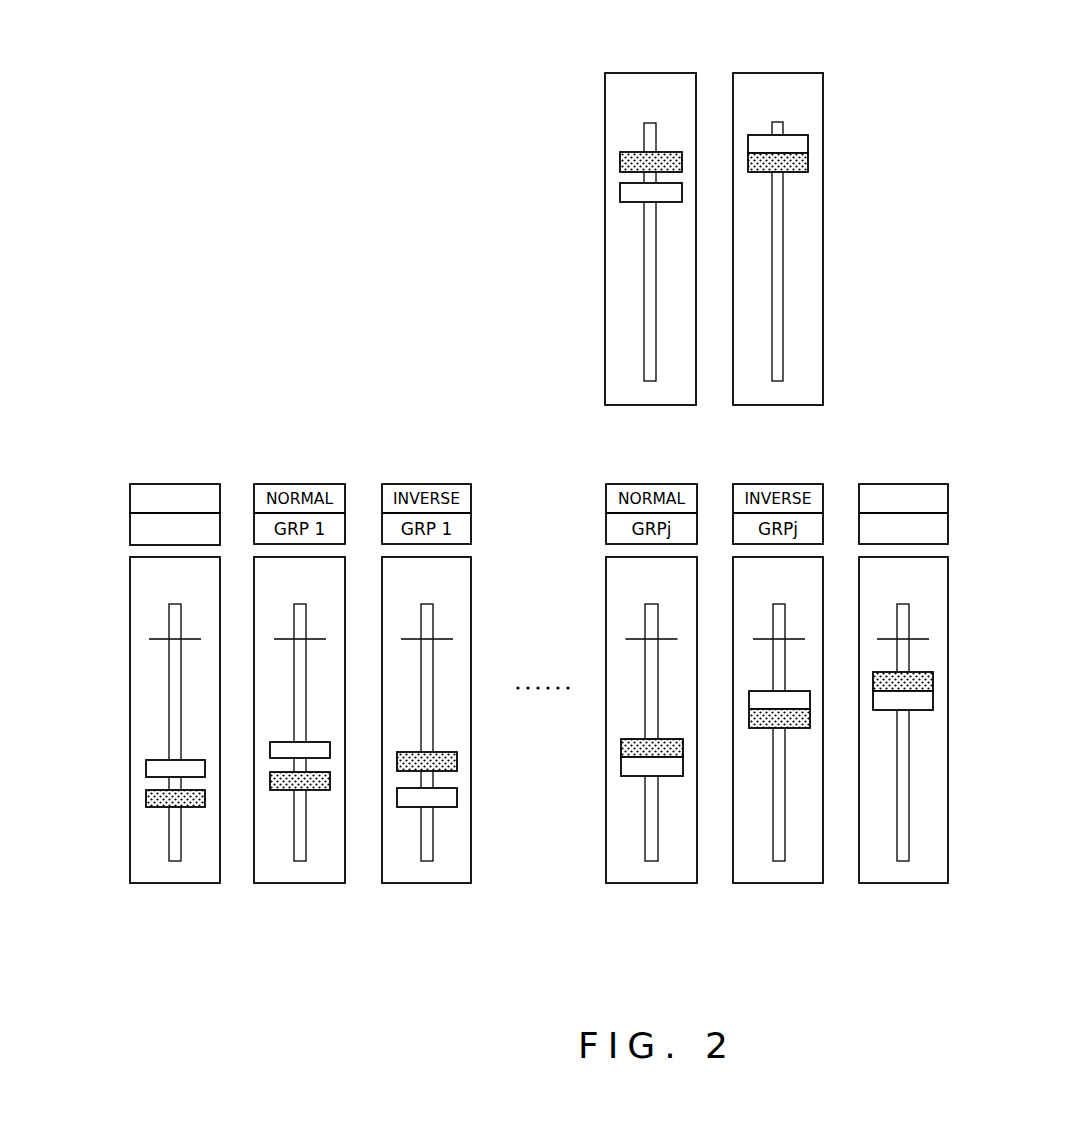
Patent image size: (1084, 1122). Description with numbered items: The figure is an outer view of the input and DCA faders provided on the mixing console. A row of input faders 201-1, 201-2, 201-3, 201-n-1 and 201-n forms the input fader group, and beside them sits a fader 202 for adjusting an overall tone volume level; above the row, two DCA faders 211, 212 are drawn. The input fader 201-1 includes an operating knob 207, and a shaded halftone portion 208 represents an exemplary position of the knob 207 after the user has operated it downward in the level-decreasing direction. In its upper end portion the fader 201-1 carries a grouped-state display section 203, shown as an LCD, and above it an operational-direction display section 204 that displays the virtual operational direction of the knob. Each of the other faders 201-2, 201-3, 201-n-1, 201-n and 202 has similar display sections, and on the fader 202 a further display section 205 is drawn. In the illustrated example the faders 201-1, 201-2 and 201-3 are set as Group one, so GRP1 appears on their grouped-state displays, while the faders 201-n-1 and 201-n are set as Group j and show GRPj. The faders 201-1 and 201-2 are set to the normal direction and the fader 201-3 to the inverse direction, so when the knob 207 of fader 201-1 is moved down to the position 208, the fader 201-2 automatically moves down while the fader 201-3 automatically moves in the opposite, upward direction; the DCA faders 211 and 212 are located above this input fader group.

The input fader 201-1 is at (133, 769).
The input fader 201-2 is at (292, 884).
The input fader 201-3 is at (420, 884).
The input fader 201-n-1 is at (645, 884).
The input fader 201-n is at (773, 884).
The fader 202 is at (897, 884).
The grouped-state display section 203 is at (222, 527).
The operational-direction display section 204 is at (148, 484).
The mode display of unassigned channel 205 is at (918, 482).
The operating knob 207 is at (146, 768).
The shaded portion 208 is at (145, 795).
The DCA fader 211 is at (635, 73).
The DCA fader 212 is at (763, 73).